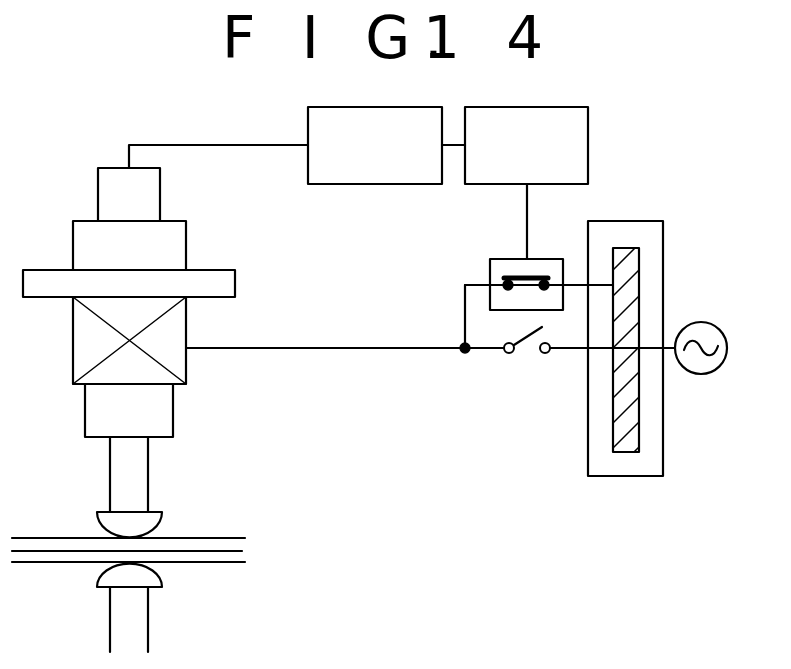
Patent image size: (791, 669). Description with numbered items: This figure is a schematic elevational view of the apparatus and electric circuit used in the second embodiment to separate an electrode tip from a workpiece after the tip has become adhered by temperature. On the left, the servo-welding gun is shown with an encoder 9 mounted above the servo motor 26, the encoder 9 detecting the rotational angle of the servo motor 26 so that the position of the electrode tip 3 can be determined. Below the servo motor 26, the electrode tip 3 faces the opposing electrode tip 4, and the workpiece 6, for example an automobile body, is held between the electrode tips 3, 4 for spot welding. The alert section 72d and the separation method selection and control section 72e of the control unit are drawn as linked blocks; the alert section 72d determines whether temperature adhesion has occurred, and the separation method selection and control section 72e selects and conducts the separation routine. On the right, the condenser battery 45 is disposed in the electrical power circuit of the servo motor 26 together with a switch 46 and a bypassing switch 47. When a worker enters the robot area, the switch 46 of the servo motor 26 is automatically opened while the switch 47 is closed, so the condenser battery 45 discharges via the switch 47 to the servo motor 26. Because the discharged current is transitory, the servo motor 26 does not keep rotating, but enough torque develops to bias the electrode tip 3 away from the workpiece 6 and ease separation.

The encoder 9 is at (160, 192).
The servo motor 26 is at (186, 331).
The electrode tip 3 is at (148, 480).
The workpiece 6 is at (240, 544).
The electrode tip 4 is at (148, 613).
The alert section 72d is at (330, 184).
The separation method selection and control section 72e is at (588, 143).
The switch 47 is at (508, 259).
The switch 46 is at (545, 354).
The condenser battery 45 is at (611, 221).